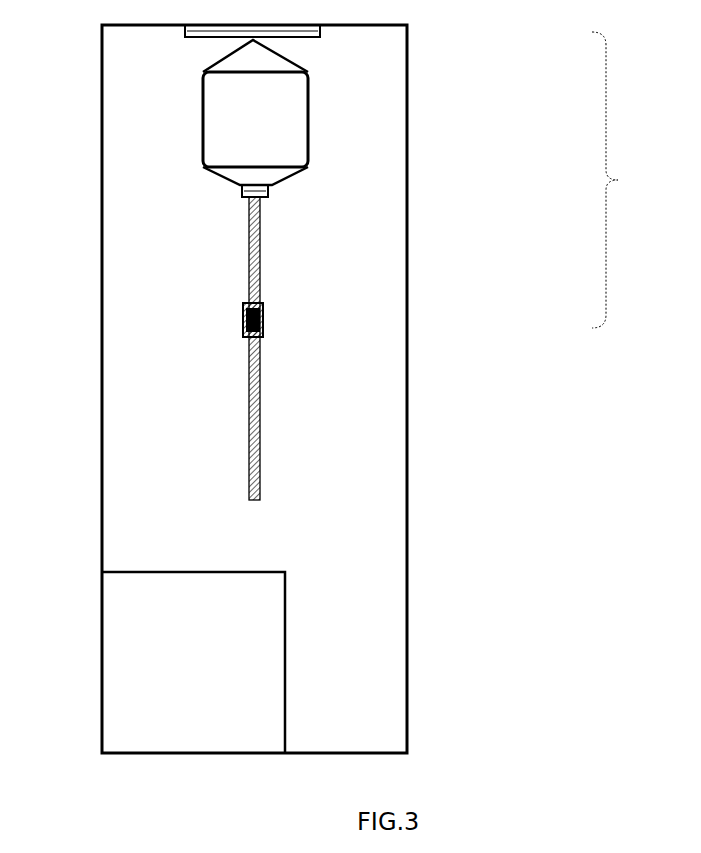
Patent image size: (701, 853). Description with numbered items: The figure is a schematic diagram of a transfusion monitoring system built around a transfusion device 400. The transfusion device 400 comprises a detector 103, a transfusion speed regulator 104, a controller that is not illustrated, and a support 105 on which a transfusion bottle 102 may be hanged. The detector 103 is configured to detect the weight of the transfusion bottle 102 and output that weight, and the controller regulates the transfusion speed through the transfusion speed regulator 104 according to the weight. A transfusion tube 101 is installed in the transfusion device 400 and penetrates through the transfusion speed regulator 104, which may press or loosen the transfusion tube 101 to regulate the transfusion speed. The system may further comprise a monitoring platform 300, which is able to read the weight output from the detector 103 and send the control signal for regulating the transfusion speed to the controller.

The transfusion tube 101 is at (251, 453).
The transfusion bottle 102 is at (213, 127).
The detector 103 is at (320, 33).
The transfusion speed regulator 104 is at (263, 315).
The support 105 is at (275, 59).
The monitoring platform 300 is at (260, 680).
The transfusion device 400 is at (630, 180).